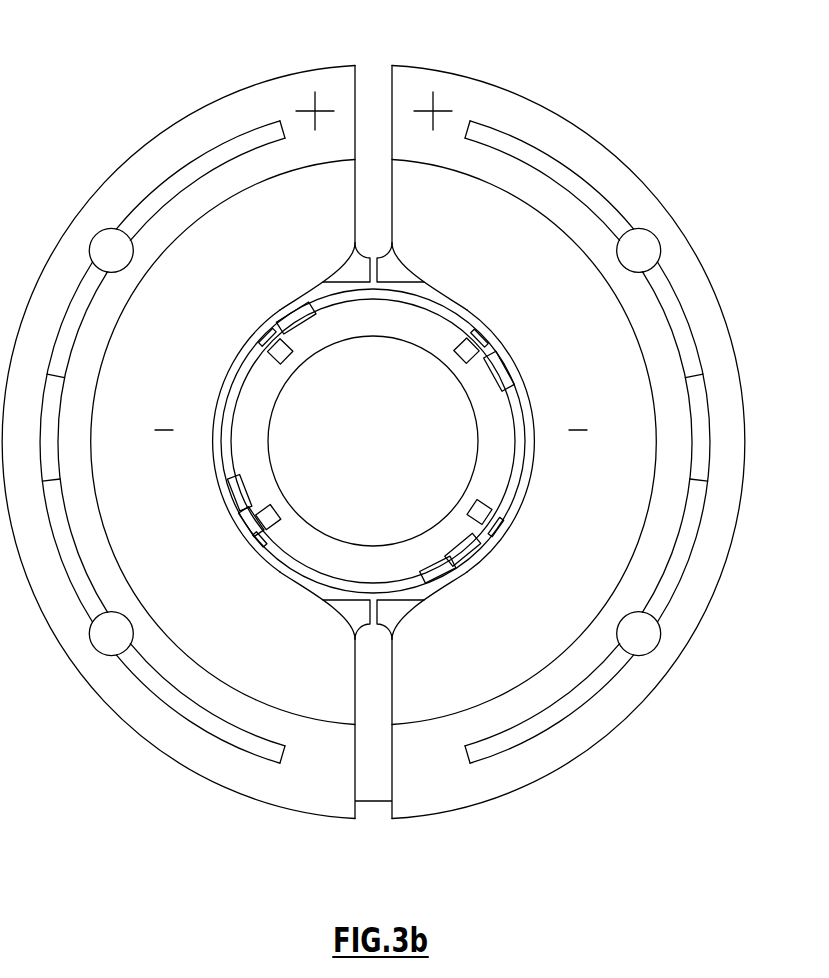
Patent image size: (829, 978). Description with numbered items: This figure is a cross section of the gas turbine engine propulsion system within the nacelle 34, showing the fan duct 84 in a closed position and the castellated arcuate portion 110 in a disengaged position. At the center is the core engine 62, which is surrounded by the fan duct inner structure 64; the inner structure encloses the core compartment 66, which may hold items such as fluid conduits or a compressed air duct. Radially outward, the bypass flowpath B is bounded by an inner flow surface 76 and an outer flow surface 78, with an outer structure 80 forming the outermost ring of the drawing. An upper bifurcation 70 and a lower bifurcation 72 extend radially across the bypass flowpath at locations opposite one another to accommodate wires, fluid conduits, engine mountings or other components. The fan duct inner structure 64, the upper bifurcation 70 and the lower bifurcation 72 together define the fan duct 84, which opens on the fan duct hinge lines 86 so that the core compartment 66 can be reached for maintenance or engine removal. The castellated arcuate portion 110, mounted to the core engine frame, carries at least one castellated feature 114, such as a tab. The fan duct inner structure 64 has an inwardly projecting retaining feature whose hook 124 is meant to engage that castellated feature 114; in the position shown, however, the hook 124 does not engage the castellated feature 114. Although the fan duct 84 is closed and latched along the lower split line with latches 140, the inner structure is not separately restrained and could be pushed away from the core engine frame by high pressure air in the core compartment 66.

The nacelle 34 is at (725, 318).
The core engine 62 is at (390, 441).
The fan duct inner structure 64 is at (228, 492).
The core compartment 66 is at (524, 381).
The upper bifurcation 70 is at (355, 200).
The lower bifurcation 72 is at (355, 684).
The inner flow surface 76 is at (268, 560).
The outer flow surface 78 is at (104, 530).
The outer ring 80 is at (189, 768).
The fan duct 84 is at (649, 50).
The fan duct hinge lines 86 is at (316, 110).
The castellated arcuate portion 110 is at (518, 476).
The castellated feature 114 is at (297, 302).
The hook 124 is at (258, 338).
The latches 140 is at (371, 812).